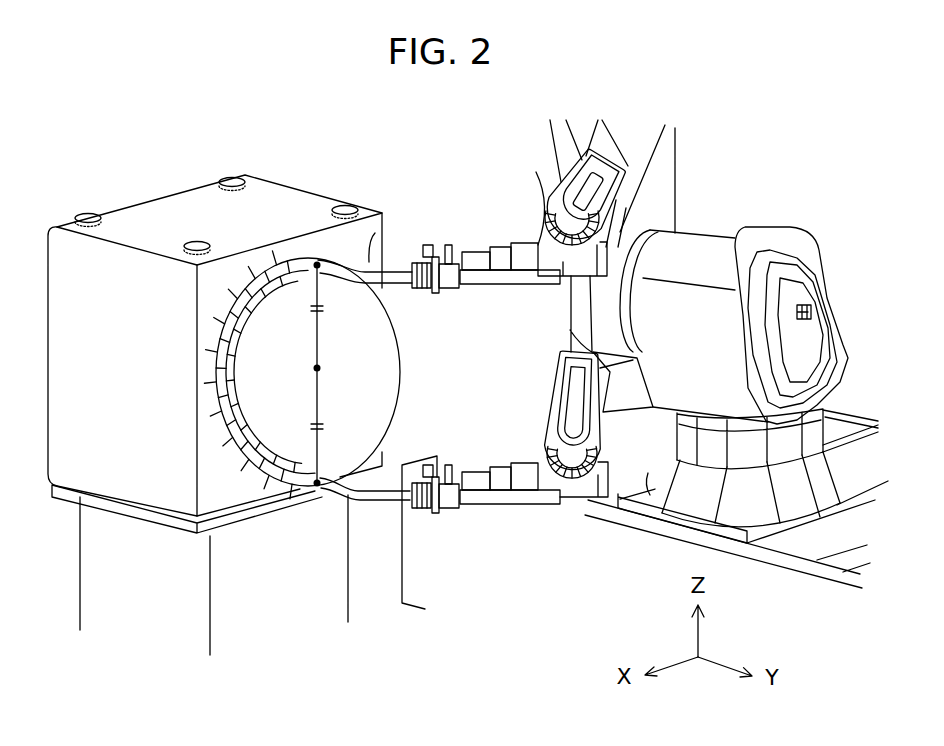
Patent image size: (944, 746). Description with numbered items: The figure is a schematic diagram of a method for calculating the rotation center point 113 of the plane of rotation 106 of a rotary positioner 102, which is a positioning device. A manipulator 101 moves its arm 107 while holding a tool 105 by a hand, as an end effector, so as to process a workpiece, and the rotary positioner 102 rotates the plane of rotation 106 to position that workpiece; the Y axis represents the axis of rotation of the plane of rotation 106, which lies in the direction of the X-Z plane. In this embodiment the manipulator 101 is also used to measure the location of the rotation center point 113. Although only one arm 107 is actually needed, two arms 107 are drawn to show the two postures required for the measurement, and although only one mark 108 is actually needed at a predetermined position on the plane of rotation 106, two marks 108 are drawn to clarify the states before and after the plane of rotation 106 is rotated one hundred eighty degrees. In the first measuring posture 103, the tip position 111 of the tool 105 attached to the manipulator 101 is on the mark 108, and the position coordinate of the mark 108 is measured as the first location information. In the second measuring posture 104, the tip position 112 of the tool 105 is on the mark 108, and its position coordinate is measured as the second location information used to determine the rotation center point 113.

The manipulator 101 is at (662, 185).
The rotary positioner 102 is at (148, 213).
The first measuring posture 103 is at (547, 167).
The second measuring posture 104 is at (410, 535).
The tool 105 is at (401, 288).
The plane of rotation 106 is at (262, 388).
The arm 107 is at (584, 270).
The mark 108 is at (316, 262).
The tip position 111 is at (318, 262).
The tip position 112 is at (316, 487).
The rotation center point 113 is at (315, 366).